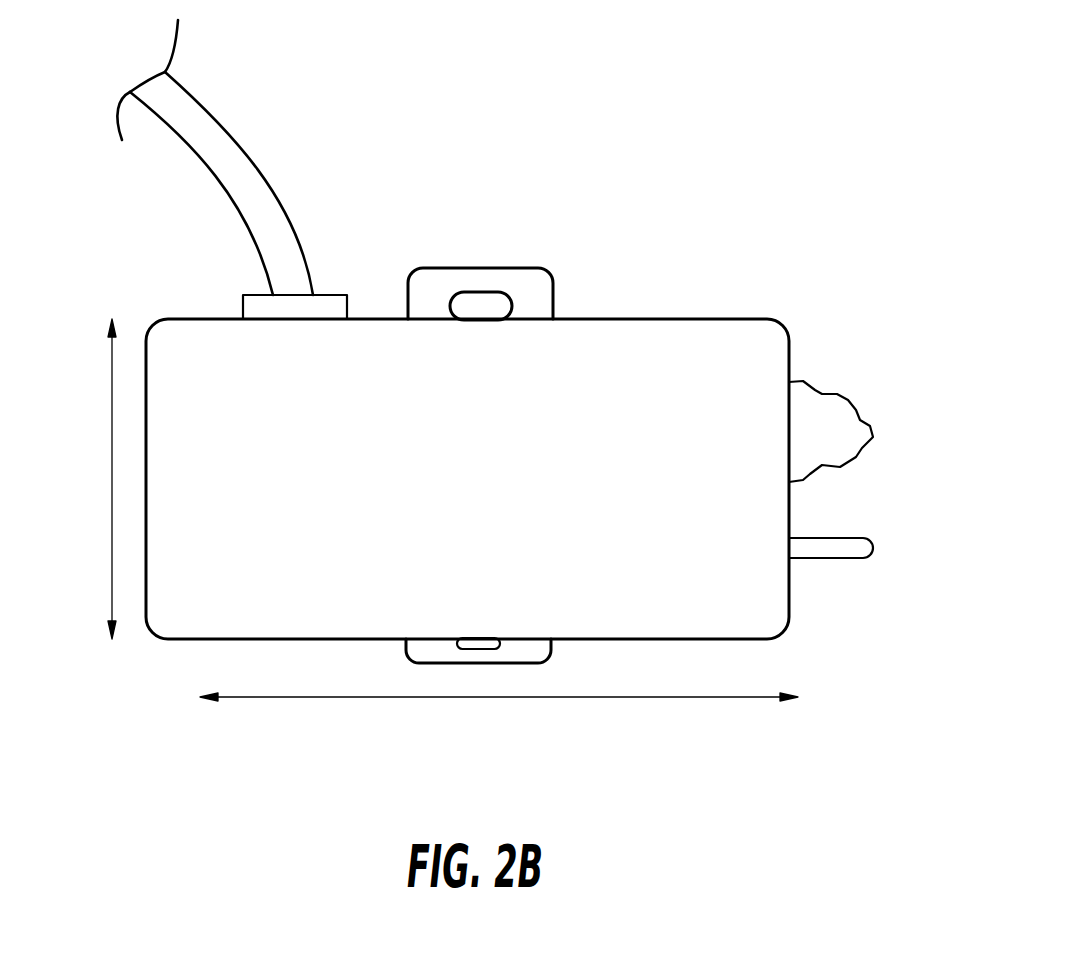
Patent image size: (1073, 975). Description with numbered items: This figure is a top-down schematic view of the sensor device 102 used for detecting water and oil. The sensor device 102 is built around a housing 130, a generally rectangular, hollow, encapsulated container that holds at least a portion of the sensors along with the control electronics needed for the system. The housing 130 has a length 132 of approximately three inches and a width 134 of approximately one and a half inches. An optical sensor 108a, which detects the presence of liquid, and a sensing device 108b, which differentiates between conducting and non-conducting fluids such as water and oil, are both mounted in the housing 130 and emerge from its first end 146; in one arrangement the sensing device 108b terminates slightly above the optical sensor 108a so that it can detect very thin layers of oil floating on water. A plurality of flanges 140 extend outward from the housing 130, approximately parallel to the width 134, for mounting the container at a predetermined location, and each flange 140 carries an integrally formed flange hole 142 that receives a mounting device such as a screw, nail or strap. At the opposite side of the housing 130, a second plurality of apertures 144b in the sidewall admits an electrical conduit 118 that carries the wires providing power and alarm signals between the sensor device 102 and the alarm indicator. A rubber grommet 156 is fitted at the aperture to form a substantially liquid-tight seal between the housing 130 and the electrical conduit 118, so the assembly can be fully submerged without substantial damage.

The sensor device 102 is at (500, 434).
The optical sensor 108a is at (822, 393).
The sensing device 108b is at (818, 560).
The electrical conduit 118 is at (262, 167).
The housing 130 is at (703, 492).
The length 132 is at (499, 715).
The width 134 is at (79, 479).
The flange 140 is at (553, 300).
The flange hole 142 is at (480, 305).
The second plurality of apertures 144b is at (243, 313).
The first end 146 is at (875, 485).
The rubber grommet 156 is at (257, 293).